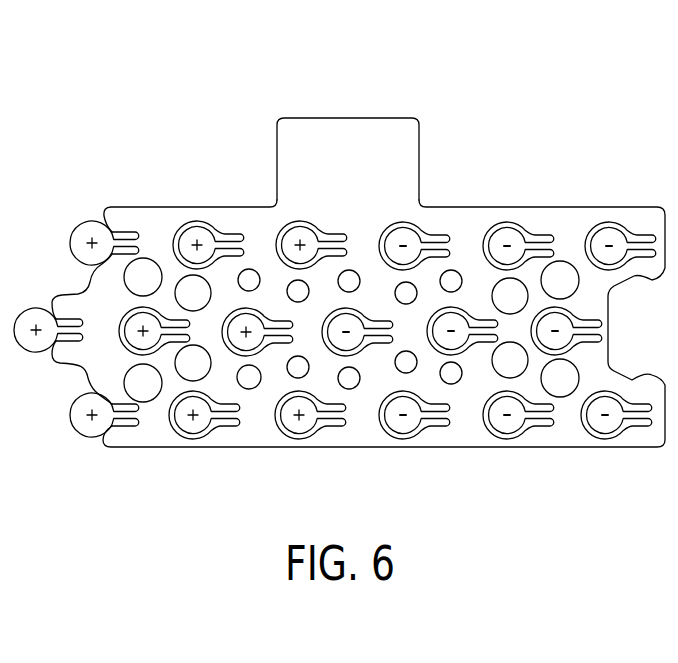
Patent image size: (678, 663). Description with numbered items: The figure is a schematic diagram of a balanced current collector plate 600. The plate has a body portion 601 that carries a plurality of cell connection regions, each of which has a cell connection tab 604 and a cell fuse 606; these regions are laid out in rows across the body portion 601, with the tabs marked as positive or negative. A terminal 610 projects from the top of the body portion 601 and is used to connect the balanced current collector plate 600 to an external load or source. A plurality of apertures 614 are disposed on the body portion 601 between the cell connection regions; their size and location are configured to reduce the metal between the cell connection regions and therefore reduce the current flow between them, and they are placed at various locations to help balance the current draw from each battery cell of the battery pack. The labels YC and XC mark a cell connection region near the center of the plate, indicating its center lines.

The balanced current collector plate 600 is at (168, 94).
The body portion 601 is at (133, 215).
The cell connection tab 604 is at (504, 238).
The cell fuse 606 is at (554, 243).
The terminal 610 is at (408, 150).
The apertures 614 is at (238, 389).
The Y center line YC is at (348, 335).
The X center line XC is at (386, 330).